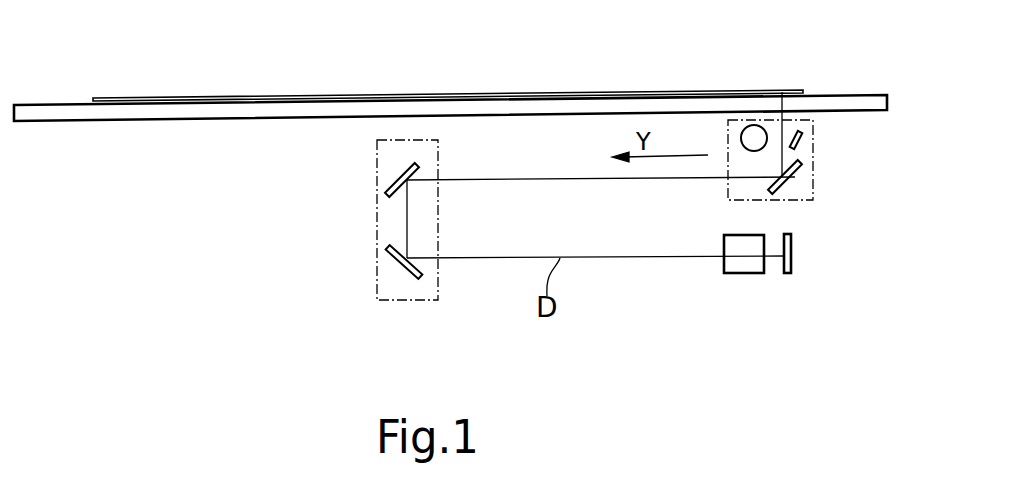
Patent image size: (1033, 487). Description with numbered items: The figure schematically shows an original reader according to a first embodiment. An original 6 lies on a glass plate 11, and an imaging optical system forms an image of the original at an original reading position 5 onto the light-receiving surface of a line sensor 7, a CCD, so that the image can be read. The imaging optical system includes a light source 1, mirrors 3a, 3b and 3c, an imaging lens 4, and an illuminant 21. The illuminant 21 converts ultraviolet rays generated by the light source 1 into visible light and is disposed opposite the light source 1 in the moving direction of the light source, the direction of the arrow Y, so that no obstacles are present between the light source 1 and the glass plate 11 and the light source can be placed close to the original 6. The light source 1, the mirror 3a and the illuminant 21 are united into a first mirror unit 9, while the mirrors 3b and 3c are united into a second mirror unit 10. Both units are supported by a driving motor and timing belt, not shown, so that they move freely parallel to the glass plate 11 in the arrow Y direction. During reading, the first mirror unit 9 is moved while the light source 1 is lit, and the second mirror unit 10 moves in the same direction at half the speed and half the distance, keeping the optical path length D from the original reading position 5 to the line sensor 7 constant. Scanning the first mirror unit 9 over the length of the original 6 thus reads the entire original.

The light source 1 is at (731, 120).
The mirror 3a is at (810, 176).
The mirror 3b is at (398, 180).
The mirror 3c is at (410, 283).
The imaging lens 4 is at (738, 275).
The original reading position 5 is at (781, 92).
The original 6 is at (330, 93).
The line sensor (CCD) 7 is at (792, 262).
The first mirror unit 9 is at (800, 200).
The second mirror unit 10 is at (374, 282).
The glass plate 11 is at (842, 100).
The illuminant 21 is at (805, 140).